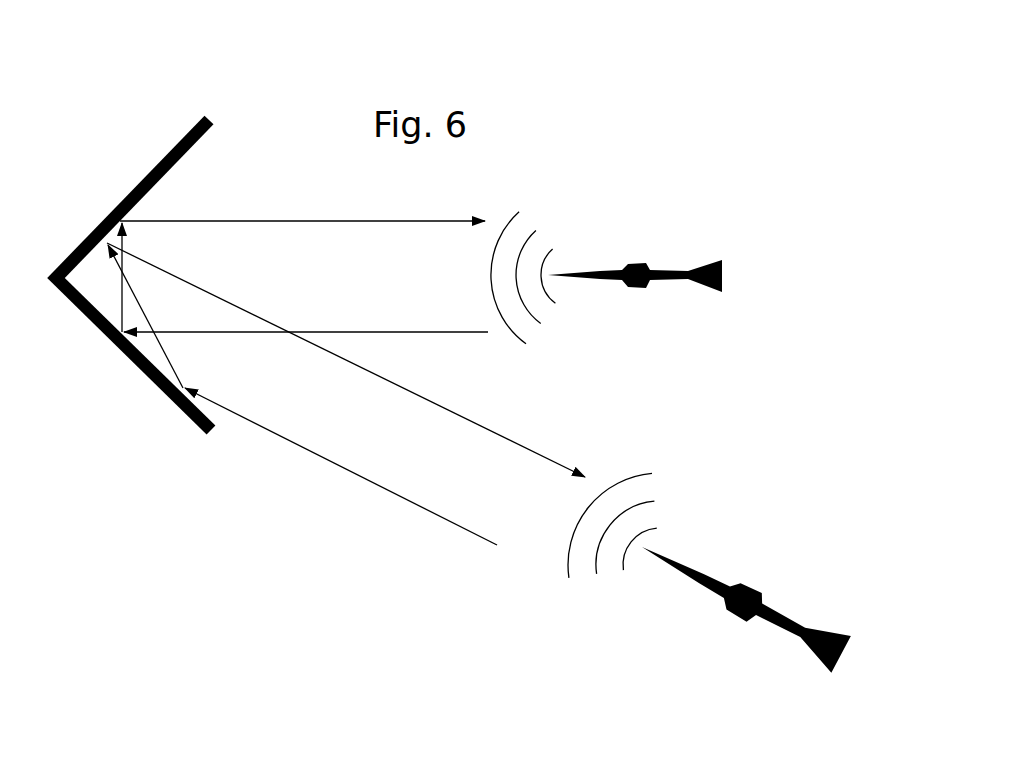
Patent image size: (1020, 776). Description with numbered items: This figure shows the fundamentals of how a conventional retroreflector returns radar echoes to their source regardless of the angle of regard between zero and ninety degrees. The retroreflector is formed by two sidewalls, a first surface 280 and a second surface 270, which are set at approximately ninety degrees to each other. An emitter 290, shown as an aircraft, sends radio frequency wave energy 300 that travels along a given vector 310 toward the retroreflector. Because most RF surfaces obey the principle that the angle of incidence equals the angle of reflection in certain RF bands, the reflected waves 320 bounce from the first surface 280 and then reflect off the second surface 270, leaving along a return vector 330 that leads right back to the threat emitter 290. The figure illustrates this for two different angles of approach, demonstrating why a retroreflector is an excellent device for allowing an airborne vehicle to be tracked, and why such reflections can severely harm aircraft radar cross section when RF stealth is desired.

The second surface 270 is at (130, 197).
The first surface 280 is at (131, 356).
The emitter 290 is at (699, 448).
The radio frequency wave energy 300 is at (593, 395).
The vector 310 is at (310, 424).
The reflected waves 320 is at (145, 305).
The return vector 330 is at (346, 334).